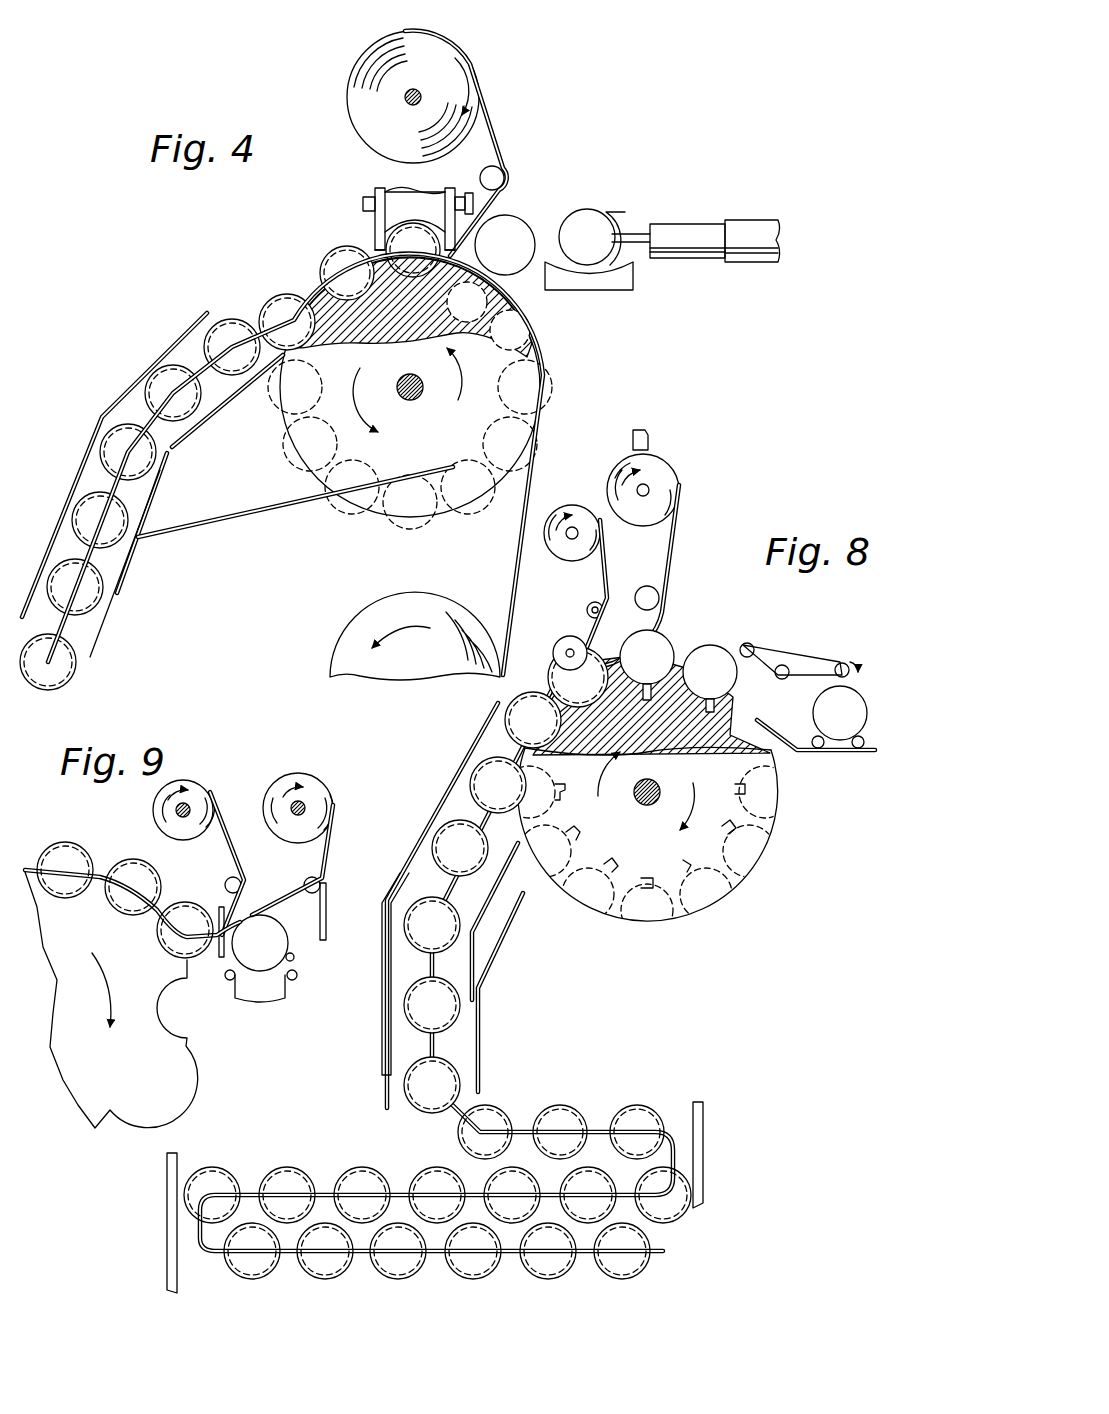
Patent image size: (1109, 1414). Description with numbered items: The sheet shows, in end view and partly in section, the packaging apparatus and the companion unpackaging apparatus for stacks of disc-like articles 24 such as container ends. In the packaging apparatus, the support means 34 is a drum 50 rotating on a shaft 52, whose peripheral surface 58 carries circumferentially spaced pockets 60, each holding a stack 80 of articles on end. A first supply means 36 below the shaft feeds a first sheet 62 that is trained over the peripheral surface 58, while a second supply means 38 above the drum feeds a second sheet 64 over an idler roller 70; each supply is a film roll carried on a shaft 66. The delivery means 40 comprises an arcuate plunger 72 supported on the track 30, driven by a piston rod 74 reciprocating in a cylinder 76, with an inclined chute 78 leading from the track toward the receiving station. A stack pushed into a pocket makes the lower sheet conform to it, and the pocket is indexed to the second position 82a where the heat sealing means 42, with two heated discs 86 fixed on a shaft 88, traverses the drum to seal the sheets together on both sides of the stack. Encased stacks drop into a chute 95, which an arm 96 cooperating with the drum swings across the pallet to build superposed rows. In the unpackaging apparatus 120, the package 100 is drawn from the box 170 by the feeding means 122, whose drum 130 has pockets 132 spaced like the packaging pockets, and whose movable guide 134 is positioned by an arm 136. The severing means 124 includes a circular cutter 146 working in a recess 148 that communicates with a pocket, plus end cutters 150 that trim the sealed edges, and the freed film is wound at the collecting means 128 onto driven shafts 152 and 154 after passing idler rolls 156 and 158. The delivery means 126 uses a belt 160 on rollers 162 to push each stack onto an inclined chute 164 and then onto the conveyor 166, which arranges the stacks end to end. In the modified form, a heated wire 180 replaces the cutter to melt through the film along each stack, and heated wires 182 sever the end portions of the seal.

In FIG. 4, the disc-like articles 24 is at (585, 222).
In FIG. 4, the track 30 is at (513, 235).
In FIG. 4, the support means 34 is at (436, 387).
In FIG. 4, the first supply means 36 is at (325, 625).
In FIG. 4, the second supply means 38 is at (338, 86).
In FIG. 4, the delivery means 40 is at (690, 160).
In FIG. 4, the heat sealing means 42 is at (352, 204).
In FIG. 4, the drum 50 is at (330, 448).
In FIG. 4, the shaft 52 is at (420, 403).
In FIG. 4, the peripheral surface 58 is at (340, 442).
In FIG. 4, the pockets 60 is at (440, 345).
In FIG. 4, the first sheet 62 is at (516, 578).
In FIG. 4, the second sheet 64 is at (492, 122).
In FIG. 4, the shaft 66 is at (404, 95).
In FIG. 4, the idler roller 70 is at (498, 170).
In FIG. 4, the arcuate plunger 72 is at (606, 210).
In FIG. 4, the piston rod 74 is at (640, 232).
In FIG. 4, the cylinder 76 is at (742, 228).
In FIG. 4, the inclined chute 78 is at (527, 287).
In FIG. 8, the stack 80 is at (662, 636).
In FIG. 9, the stack 80 is at (273, 932).
In FIG. 4, the second position 82a is at (390, 250).
In FIG. 4, the heated rolls or discs 86 is at (450, 198).
In FIG. 4, the shaft 88 is at (368, 206).
In FIG. 4, the chute 95 is at (117, 400).
In FIG. 4, the arm 96 is at (255, 508).
In FIG. 8, the package 100 is at (335, 1150).
In FIG. 8, the unpackaging apparatus 120 is at (555, 1002).
In FIG. 8, the feeding means 122 is at (740, 916).
In FIG. 9, the feeding means 122 is at (48, 1102).
In FIG. 8, the severing means 124 is at (556, 638).
In FIG. 8, the delivery means 126 is at (770, 636).
In FIG. 8, the collecting means 128 is at (700, 485).
In FIG. 8, the drum 130 is at (677, 862).
In FIG. 8, the pockets 132 is at (638, 908).
In FIG. 8, the movable guide 134 is at (482, 1061).
In FIG. 8, the arm 136 is at (506, 962).
In FIG. 8, the circular cutter 146 is at (600, 716).
In FIG. 8, the recess 148 is at (652, 642).
In FIG. 8, the cutters 150 is at (556, 654).
In FIG. 8, the first shaft 152 is at (618, 485).
In FIG. 9, the first shaft 152 is at (292, 774).
In FIG. 8, the second shaft 154 is at (560, 530).
In FIG. 9, the second shaft 154 is at (170, 812).
In FIG. 8, the idler roll 156 is at (640, 590).
In FIG. 8, the idler roll 158 is at (592, 603).
In FIG. 8, the belt 160 is at (803, 658).
In FIG. 8, the rollers 162 is at (747, 645).
In FIG. 8, the inclined chute 164 is at (791, 752).
In FIG. 8, the conveyor 166 is at (868, 754).
In FIG. 9, the conveyor 166 is at (238, 1006).
In FIG. 8, the box 170 is at (167, 1216).
In FIG. 9, the heated wire 180 is at (292, 958).
In FIG. 9, the heated wires 182 is at (218, 905).